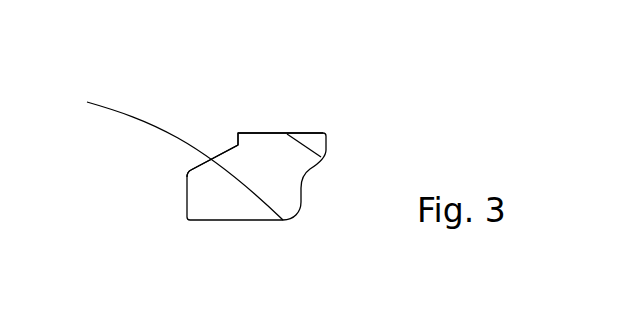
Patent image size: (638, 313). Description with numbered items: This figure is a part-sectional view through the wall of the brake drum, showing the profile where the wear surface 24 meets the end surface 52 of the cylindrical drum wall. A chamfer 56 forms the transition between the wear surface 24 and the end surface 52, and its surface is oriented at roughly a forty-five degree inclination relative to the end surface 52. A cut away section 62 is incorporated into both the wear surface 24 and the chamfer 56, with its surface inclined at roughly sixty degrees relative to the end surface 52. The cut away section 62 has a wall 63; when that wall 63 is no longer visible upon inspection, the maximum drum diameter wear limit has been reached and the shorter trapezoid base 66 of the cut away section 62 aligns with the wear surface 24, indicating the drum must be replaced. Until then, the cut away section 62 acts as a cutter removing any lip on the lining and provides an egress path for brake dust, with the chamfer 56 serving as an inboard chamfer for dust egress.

The wear surface 24 is at (267, 133).
The end surface 52 is at (187, 200).
The chamfer 56 is at (188, 172).
The cut away section 62 is at (173, 156).
The cut away section wall 63 is at (237, 140).
The shorter base 66 is at (237, 140).